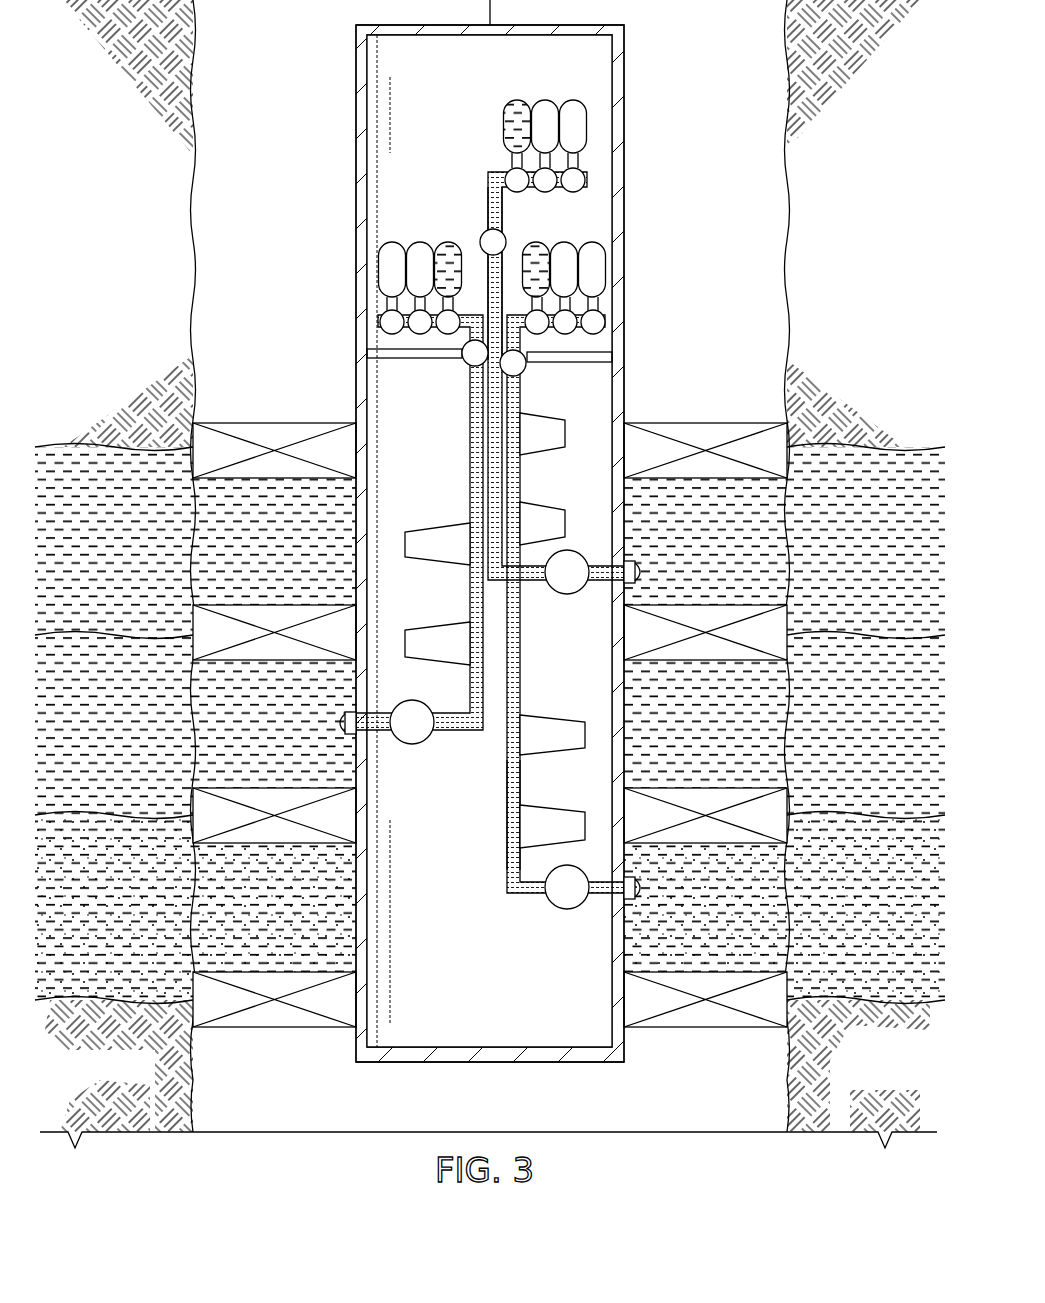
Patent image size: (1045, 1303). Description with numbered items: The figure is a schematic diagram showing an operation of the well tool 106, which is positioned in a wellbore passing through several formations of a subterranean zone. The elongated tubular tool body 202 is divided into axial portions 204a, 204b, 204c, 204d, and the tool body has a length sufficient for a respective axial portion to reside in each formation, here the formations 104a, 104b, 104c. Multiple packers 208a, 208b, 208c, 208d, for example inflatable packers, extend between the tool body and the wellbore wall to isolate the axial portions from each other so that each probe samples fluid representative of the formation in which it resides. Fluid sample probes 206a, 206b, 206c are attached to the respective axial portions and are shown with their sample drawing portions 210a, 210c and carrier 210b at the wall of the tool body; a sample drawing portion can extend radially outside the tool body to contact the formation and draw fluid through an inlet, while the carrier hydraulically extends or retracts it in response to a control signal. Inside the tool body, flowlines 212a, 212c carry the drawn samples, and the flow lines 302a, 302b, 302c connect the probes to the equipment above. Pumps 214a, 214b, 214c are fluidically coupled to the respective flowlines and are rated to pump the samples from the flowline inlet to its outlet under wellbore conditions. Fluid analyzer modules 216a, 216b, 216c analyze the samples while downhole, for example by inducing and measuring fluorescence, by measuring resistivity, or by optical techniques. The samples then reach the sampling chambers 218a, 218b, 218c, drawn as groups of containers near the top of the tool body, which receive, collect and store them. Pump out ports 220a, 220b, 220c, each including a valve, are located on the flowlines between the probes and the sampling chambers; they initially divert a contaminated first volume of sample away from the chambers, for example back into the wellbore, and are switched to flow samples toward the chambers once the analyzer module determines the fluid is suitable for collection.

The formation 104a is at (896, 551).
The formation 104b is at (896, 732).
The formation 104c is at (896, 919).
The well tool 106 is at (330, 241).
The tool body 202 is at (632, 170).
The axial portion 204a is at (350, 917).
The axial portion 204b is at (350, 677).
The axial portion 204c is at (350, 523).
The axial portion 204d is at (350, 323).
The fluid sample probe 206a is at (565, 905).
The fluid sample probe 206b is at (410, 735).
The fluid sample probe 206c is at (565, 587).
The packer 208a is at (270, 1020).
The packer 208b is at (270, 837).
The packer 208c is at (272, 615).
The packer 208d is at (272, 432).
The sample drawing portion 210a is at (636, 895).
The carrier 210b is at (346, 730).
The sample drawing portion 210c is at (636, 572).
The flowline 212a is at (507, 822).
The flowline 212c is at (487, 190).
The pump 214a is at (548, 815).
The pump 214b is at (440, 637).
The pump 214c is at (540, 513).
The fluid analyzer module 216a is at (548, 727).
The fluid analyzer module 216b is at (440, 540).
The fluid analyzer module 216c is at (540, 427).
The sampling chambers 218a is at (605, 238).
The sampling chambers 218b is at (462, 238).
The sampling chambers 218c is at (587, 94).
The pump out port 220a is at (523, 362).
The pump out port 220b is at (467, 364).
The pump out port 220c is at (482, 235).
The first flow line 302a is at (508, 867).
The second flow line 302b is at (457, 727).
The third flow line 302c is at (492, 445).